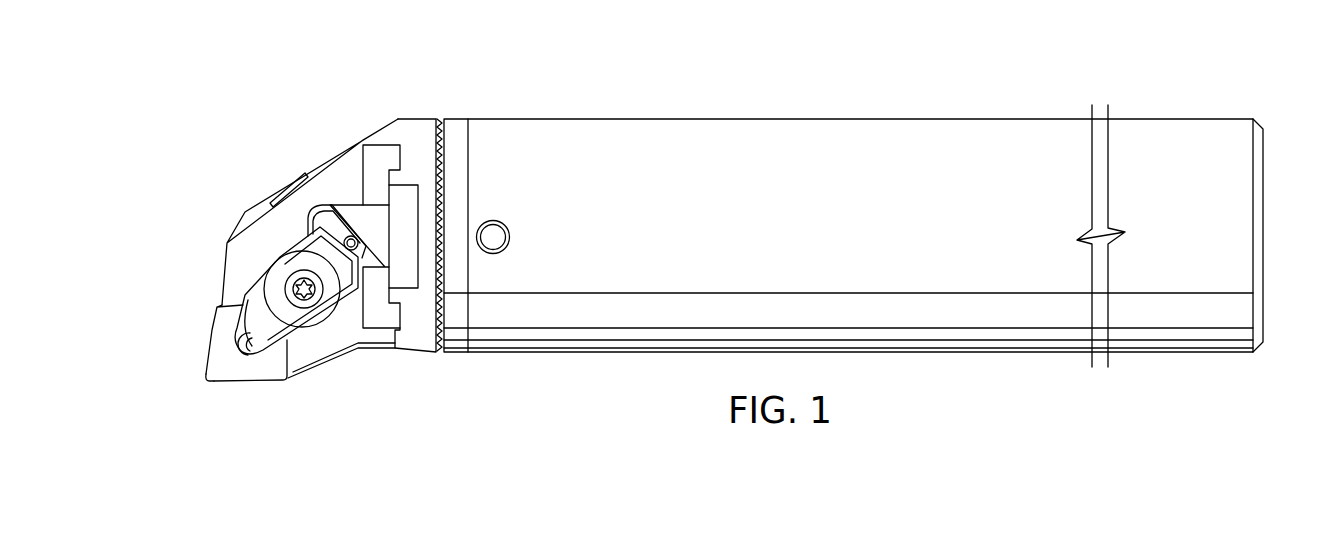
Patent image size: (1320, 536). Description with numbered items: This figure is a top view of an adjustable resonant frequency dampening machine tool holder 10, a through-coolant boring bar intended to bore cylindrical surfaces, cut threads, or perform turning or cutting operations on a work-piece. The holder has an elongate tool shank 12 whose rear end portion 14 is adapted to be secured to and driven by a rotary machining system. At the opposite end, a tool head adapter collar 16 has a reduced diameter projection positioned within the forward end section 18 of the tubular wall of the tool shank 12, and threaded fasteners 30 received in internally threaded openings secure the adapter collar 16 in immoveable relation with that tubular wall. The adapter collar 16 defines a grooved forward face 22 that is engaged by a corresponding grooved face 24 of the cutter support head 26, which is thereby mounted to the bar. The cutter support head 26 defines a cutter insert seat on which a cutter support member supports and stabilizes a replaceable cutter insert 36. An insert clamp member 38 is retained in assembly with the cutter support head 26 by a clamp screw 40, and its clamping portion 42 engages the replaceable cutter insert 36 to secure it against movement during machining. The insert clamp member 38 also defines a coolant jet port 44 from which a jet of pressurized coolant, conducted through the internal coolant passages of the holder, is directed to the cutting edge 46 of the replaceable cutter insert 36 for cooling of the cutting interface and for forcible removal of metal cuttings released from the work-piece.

The machine tool holder 10 is at (803, 80).
The tool shank 12 is at (1031, 119).
The rear end portion 14 is at (1175, 119).
The tool head adapter collar 16 is at (455, 119).
The forward end section 18 is at (418, 340).
The grooved forward face 22 is at (425, 119).
The grooved face 24 is at (445, 338).
The cutter support head 26 is at (243, 204).
The threaded fastener 30 is at (510, 237).
The replaceable cutter insert 36 is at (250, 368).
The insert clamp member 38 is at (260, 292).
The clamp screw 40 is at (295, 265).
The clamping portion 42 is at (250, 330).
The coolant jet port 44 is at (245, 355).
The cutting edge 46 is at (210, 381).